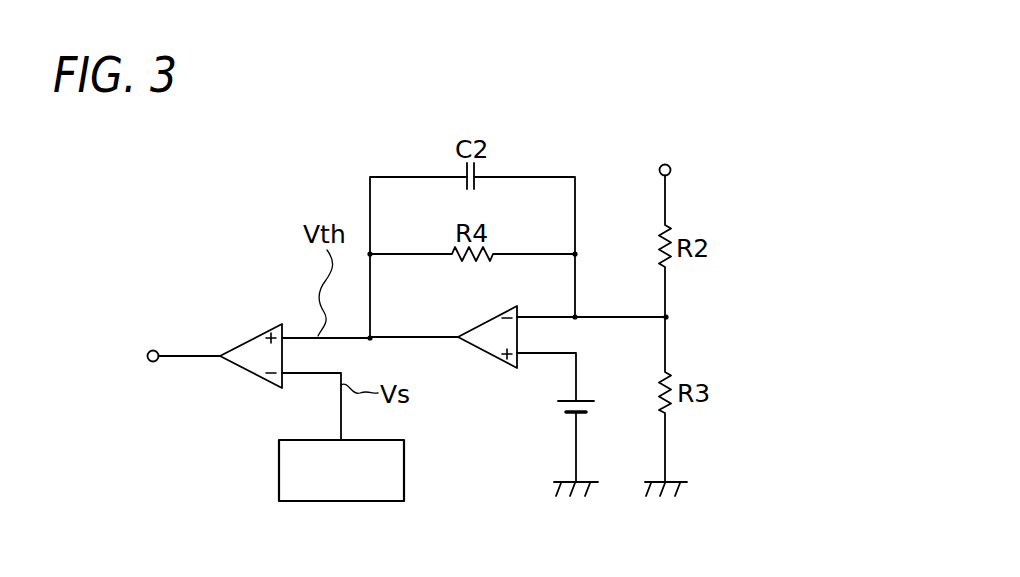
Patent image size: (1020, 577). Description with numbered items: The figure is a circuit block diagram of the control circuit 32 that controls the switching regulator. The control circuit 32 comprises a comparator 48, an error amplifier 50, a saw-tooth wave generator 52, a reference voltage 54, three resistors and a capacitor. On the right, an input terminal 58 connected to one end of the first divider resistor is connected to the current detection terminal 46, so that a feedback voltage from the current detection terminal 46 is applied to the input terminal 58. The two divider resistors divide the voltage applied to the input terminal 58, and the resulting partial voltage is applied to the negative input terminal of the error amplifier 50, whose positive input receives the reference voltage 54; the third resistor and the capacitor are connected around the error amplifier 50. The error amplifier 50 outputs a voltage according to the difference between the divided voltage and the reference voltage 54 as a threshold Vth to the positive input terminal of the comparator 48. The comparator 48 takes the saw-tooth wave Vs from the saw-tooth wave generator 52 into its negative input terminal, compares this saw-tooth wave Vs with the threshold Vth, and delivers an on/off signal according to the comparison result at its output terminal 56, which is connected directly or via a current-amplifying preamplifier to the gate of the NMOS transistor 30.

The control circuit 32 is at (328, 192).
The comparator 48 is at (256, 331).
The error amplifier 50 is at (481, 358).
The saw-tooth wave generator 52 is at (377, 502).
The reference voltage 54 is at (570, 415).
The output terminal 56 is at (157, 342).
The NMOS transistor 30 is at (154, 350).
The input terminal 58 is at (716, 140).
The current detection terminal 46 is at (667, 164).